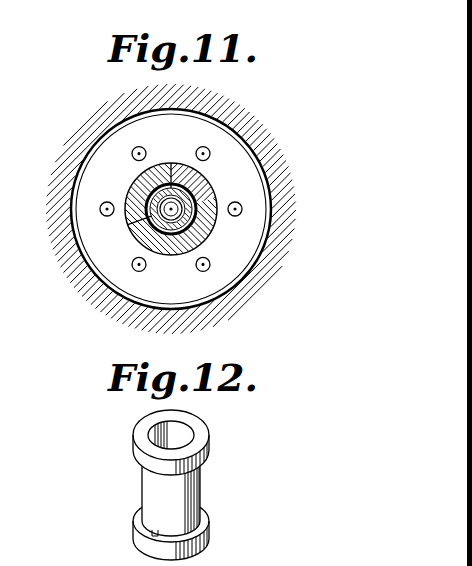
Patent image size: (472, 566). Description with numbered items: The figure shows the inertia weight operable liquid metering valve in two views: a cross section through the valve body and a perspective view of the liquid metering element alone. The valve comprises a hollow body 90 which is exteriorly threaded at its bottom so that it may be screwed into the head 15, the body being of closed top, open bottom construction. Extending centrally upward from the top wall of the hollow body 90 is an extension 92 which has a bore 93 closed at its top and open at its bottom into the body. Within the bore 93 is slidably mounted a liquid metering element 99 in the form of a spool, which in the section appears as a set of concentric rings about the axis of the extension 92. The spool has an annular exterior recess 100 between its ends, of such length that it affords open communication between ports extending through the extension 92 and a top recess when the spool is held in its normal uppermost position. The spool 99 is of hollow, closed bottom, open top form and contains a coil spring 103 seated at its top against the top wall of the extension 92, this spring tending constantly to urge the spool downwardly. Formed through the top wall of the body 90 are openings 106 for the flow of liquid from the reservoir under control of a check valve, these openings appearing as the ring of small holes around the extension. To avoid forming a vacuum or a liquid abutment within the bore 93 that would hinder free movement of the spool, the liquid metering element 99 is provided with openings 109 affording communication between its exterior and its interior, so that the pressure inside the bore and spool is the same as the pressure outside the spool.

In FIG. 11, the head 15 is at (278, 231).
In FIG. 11, the hollow body 90 is at (241, 164).
In FIG. 11, the extension 92 is at (131, 190).
In FIG. 11, the bore 93 is at (151, 217).
In FIG. 11, the liquid metering element 99 is at (170, 188).
In FIG. 12, the liquid metering element 99 is at (203, 485).
In FIG. 12, the annular exterior recess 100 is at (210, 490).
In FIG. 11, the coil spring 103 is at (192, 204).
In FIG. 11, the openings 106 is at (208, 260).
In FIG. 12, the openings 109 is at (211, 539).